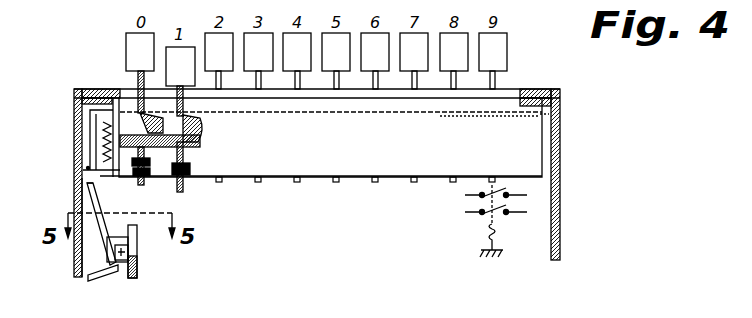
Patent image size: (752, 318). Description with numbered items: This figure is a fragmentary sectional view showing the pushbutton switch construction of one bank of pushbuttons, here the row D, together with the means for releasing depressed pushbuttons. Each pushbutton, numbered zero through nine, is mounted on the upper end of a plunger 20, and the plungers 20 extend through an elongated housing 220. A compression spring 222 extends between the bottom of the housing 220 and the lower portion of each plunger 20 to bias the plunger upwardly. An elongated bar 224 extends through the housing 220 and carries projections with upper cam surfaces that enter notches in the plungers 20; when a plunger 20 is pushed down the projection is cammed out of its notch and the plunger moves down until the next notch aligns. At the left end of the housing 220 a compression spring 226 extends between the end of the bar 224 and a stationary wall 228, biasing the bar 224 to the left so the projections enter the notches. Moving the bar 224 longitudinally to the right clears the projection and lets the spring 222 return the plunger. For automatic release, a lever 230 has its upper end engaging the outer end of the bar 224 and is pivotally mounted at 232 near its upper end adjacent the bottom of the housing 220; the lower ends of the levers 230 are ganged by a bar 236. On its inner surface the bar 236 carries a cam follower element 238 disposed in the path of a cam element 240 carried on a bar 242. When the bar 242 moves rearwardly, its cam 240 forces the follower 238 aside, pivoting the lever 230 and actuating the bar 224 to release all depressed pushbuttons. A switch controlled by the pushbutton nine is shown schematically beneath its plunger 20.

The plunger 20 is at (138, 82).
The elongated housing 220 is at (313, 154).
The compression spring 222 is at (163, 178).
The elongated bar 224 is at (204, 142).
The compression spring 226 is at (108, 114).
The stationary wall 228 is at (113, 152).
The lever 230 is at (72, 209).
The pivot 232 is at (77, 178).
The bar 236 is at (95, 280).
The cam follower element 238 is at (116, 237).
The cam element 240 is at (124, 262).
The bar 242 is at (138, 259).
The row of pushbuttons D is at (508, 54).